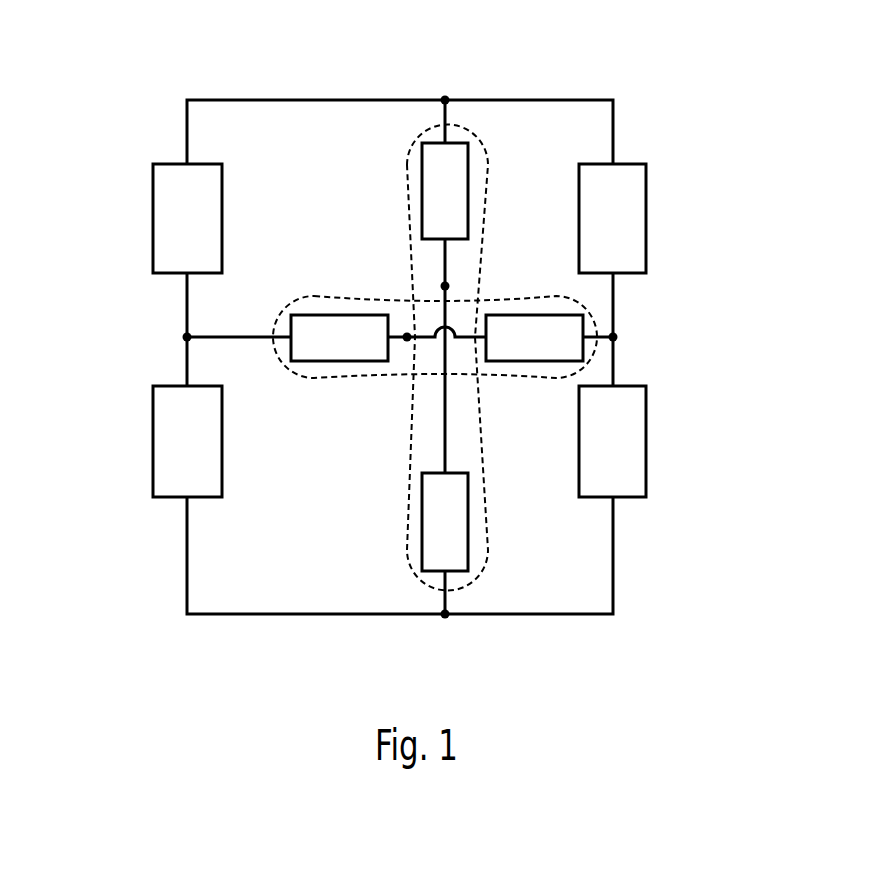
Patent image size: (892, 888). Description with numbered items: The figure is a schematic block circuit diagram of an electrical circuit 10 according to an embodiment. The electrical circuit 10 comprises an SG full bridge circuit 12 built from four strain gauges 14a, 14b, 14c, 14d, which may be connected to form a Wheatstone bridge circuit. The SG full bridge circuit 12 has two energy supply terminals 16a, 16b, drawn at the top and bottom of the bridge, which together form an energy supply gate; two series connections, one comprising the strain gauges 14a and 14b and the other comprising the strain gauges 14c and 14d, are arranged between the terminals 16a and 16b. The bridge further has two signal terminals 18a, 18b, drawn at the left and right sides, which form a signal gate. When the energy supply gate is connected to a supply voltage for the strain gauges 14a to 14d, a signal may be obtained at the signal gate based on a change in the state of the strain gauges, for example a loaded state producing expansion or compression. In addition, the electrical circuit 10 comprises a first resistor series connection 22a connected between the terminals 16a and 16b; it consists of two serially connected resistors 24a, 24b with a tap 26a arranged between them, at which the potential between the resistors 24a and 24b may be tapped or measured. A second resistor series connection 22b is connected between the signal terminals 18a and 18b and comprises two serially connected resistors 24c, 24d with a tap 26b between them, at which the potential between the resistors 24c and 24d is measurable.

The electrical circuit 10 is at (764, 28).
The SG full bridge circuit 12 is at (138, 140).
The strain gauge 14a is at (153, 212).
The strain gauge 14b is at (153, 438).
The strain gauge 14c is at (646, 221).
The strain gauge 14d is at (646, 442).
The energy supply terminal 16a is at (445, 100).
The energy supply terminal 16b is at (445, 614).
The signal terminal 18a is at (187, 337).
The signal terminal 18b is at (613, 337).
The first resistor series connection 22a is at (488, 160).
The second resistor series connection 22b is at (320, 297).
The resistor 24a is at (422, 185).
The resistor 24b is at (422, 520).
The resistor 24c is at (320, 361).
The resistor 24d is at (535, 361).
The tap 26a is at (443, 286).
The tap 26b is at (407, 341).